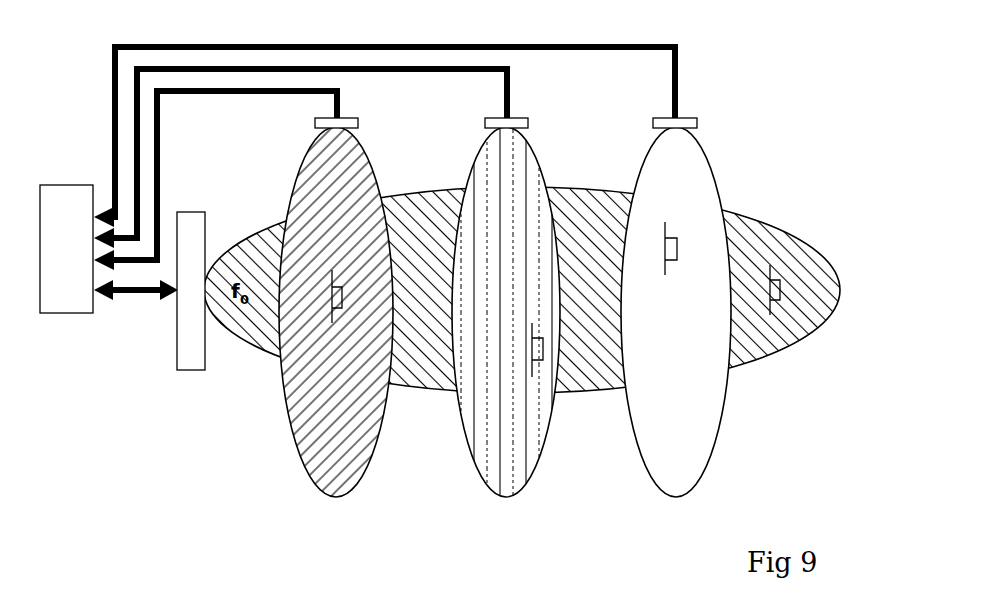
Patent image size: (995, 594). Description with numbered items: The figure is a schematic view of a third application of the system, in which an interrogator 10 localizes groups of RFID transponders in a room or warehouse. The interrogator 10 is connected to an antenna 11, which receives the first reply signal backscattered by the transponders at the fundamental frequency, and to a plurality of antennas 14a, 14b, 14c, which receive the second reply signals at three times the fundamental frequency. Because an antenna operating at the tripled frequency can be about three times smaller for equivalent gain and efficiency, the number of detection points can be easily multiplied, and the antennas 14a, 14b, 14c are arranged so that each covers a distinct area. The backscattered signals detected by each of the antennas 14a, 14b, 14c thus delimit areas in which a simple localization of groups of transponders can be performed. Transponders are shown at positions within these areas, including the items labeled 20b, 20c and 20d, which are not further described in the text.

The interrogator 10 is at (62, 185).
The antenna 11 is at (177, 352).
The antenna 14a is at (347, 126).
The antenna 14b is at (518, 126).
The antenna 14c is at (689, 122).
The hydrophone 20b is at (538, 362).
The hydrophone 20c is at (336, 312).
The hydrophone 20d is at (776, 300).